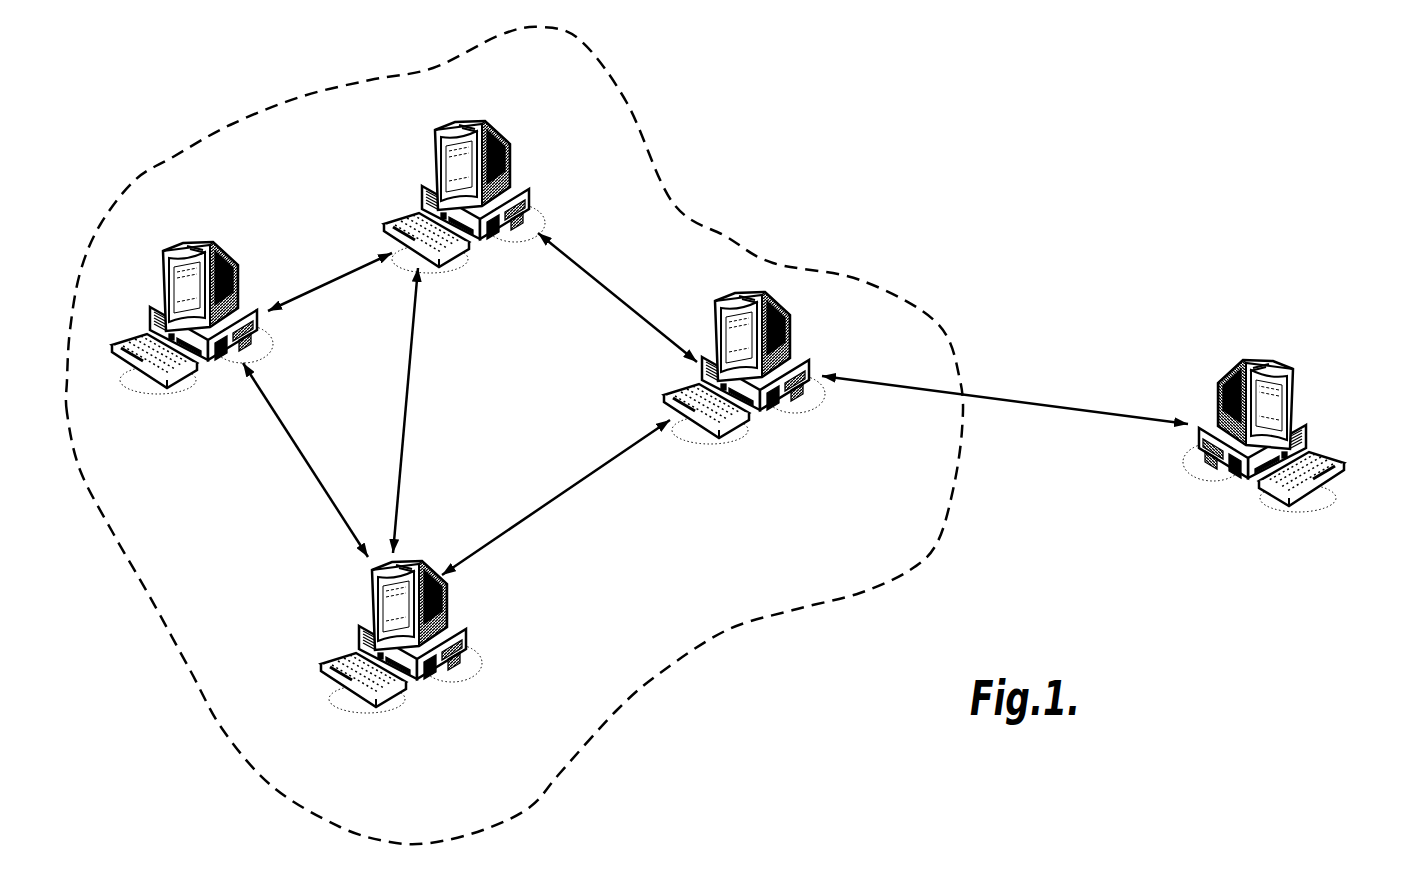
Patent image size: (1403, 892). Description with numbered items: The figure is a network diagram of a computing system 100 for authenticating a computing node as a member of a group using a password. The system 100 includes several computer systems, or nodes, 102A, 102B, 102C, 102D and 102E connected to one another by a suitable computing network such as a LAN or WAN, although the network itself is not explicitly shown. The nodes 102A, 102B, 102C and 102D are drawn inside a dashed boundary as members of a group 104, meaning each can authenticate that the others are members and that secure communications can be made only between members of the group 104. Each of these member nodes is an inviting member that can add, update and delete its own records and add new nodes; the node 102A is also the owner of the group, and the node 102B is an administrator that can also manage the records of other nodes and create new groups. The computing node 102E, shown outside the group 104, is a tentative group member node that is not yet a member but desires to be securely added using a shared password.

The computing system 100 is at (731, 435).
The computing node 102A is at (240, 292).
The computing node 102B is at (512, 168).
The computing node 102C is at (449, 608).
The computing node 102D is at (792, 340).
The tentative group member node 102E is at (1300, 400).
The group 104 is at (685, 204).